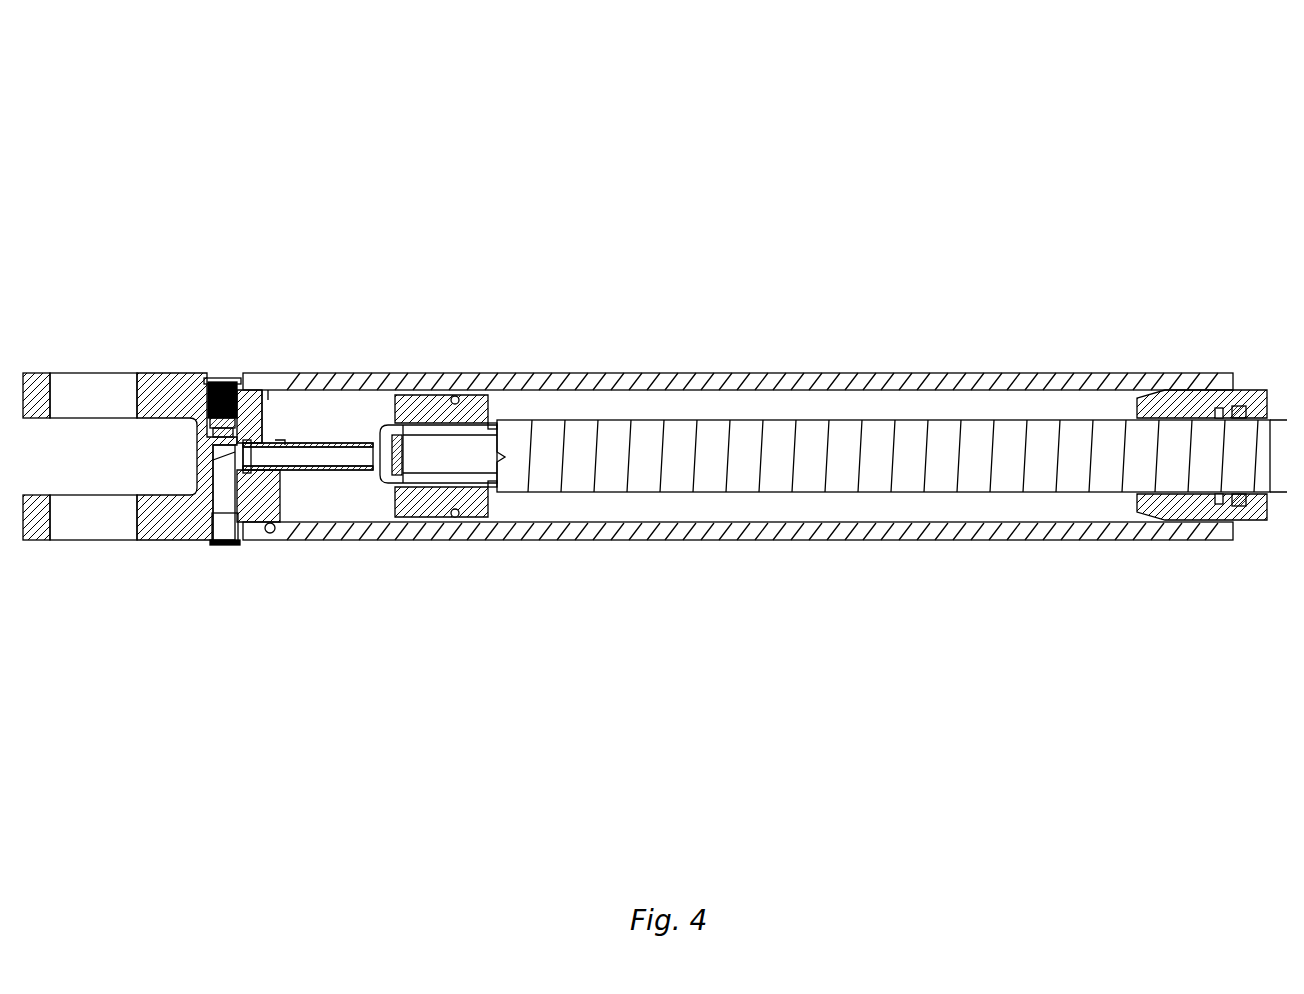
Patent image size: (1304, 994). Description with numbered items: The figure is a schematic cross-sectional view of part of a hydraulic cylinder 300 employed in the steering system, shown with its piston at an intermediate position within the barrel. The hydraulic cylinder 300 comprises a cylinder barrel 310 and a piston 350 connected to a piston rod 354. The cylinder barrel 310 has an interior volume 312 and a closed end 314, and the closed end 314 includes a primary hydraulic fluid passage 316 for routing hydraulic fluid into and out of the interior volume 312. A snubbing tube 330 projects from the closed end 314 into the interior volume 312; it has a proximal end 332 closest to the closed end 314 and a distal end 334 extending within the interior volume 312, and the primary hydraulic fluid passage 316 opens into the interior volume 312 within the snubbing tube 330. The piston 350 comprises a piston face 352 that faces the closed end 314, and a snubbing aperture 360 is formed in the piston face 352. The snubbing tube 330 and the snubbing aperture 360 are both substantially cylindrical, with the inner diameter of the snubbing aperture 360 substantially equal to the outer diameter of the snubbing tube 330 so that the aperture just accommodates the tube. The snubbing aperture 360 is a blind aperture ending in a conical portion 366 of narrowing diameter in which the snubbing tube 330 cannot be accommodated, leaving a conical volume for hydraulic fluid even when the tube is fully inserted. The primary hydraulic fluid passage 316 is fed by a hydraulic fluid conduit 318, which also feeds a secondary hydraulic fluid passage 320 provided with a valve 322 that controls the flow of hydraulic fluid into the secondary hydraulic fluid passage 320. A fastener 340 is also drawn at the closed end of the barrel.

The hydraulic cylinder 300 is at (903, 122).
The cylinder barrel 310 is at (386, 384).
The interior volume 312 is at (320, 503).
The closed end 314 is at (278, 517).
The primary hydraulic fluid passage 316 is at (236, 478).
The hydraulic fluid conduit 318 is at (223, 492).
The secondary hydraulic fluid passage 320 is at (262, 412).
The valve 322 is at (210, 421).
The snubbing tube 330 is at (312, 450).
The proximal end 332 is at (278, 440).
The distal end 334 is at (361, 440).
The fastener 340 is at (258, 407).
The piston 350 is at (447, 410).
The piston face 352 is at (384, 472).
The piston rod 354 is at (643, 435).
The snubbing aperture 360 is at (483, 460).
The conical portion 366 is at (494, 470).